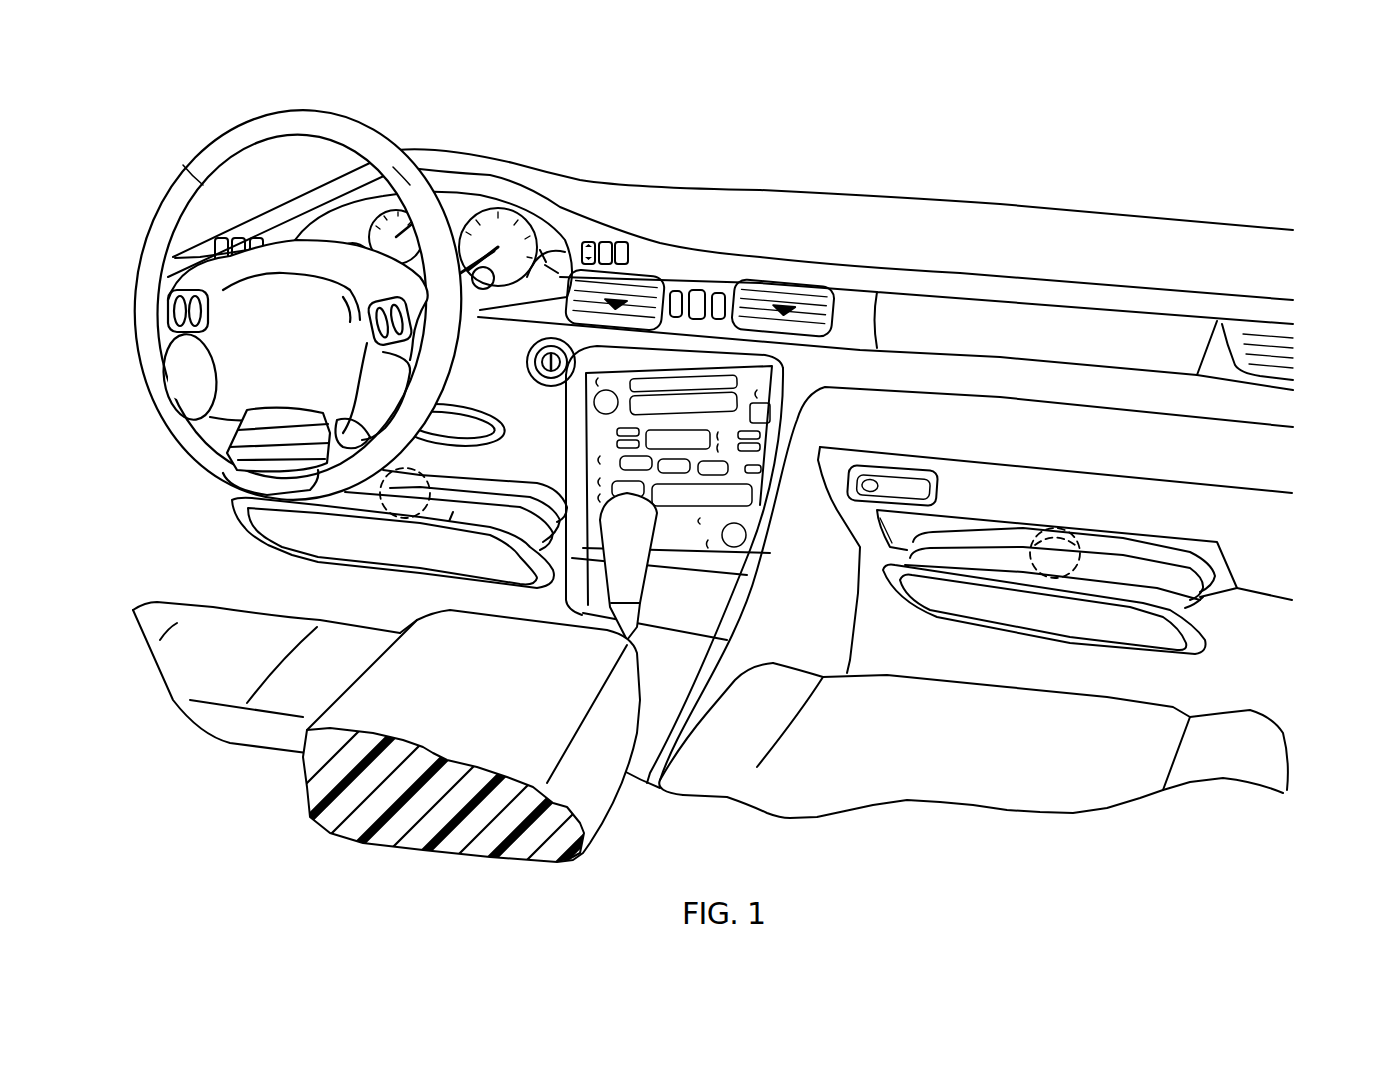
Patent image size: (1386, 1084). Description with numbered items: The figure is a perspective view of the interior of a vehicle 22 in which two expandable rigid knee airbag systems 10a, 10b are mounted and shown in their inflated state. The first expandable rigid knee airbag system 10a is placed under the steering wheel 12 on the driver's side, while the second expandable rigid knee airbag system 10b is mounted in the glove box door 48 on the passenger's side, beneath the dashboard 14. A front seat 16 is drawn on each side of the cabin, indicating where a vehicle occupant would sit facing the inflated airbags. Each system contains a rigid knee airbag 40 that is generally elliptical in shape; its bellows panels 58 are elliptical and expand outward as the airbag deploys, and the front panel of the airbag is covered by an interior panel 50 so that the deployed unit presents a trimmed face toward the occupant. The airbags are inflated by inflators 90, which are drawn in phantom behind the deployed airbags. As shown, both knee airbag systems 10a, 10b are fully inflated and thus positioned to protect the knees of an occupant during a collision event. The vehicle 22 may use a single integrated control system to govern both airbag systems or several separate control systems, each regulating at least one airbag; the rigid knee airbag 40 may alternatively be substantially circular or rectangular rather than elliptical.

The first expandable rigid knee airbag system 10a is at (217, 513).
The second expandable rigid knee airbag system 10b is at (1212, 662).
The steering wheel 12 is at (360, 135).
The dashboard 14 is at (881, 220).
The front seat 16 is at (209, 662).
The vehicle 22 is at (1168, 160).
The rigid knee airbag 40 is at (500, 512).
The glove box door 48 is at (1077, 505).
The interior panel 50 is at (272, 528).
The bellows panel 58 is at (437, 550).
The inflator 90 is at (393, 503).